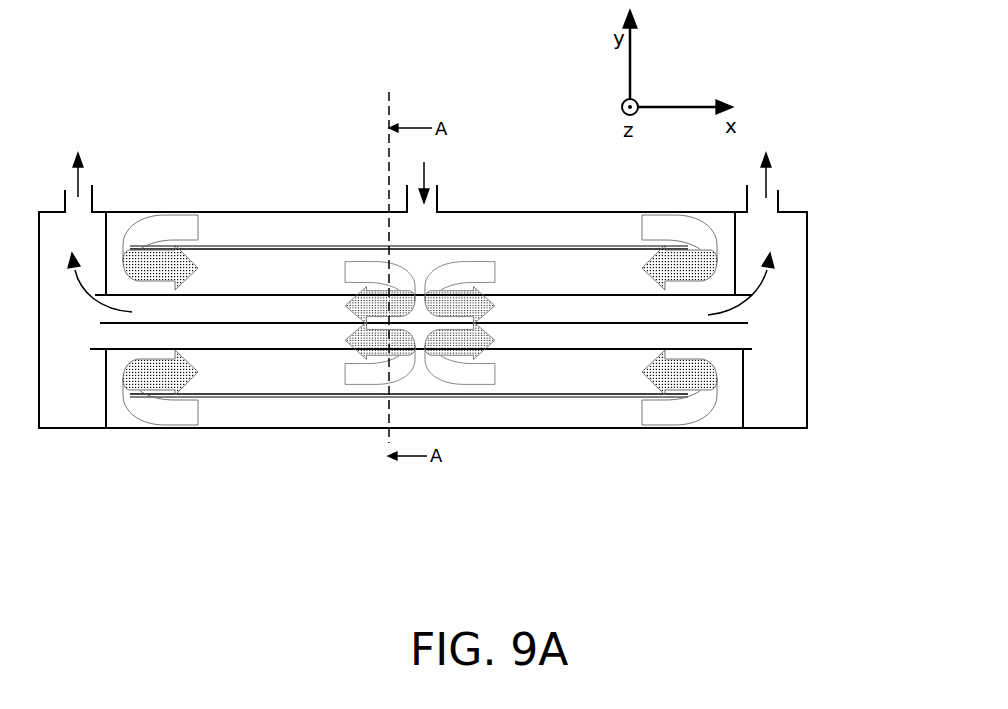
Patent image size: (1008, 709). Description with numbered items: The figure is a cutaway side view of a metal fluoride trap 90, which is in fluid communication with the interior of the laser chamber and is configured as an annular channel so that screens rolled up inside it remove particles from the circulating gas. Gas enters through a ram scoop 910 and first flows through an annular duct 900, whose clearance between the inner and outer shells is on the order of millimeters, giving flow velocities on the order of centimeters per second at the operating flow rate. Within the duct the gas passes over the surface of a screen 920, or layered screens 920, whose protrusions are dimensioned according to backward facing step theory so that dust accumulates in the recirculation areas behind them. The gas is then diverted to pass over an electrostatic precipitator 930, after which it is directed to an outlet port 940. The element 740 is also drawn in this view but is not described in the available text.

The metal fluoride trap 90 is at (807, 323).
The annular duct 900 is at (557, 242).
The ram scoop 910 is at (438, 212).
The screen 920 is at (363, 247).
The electrostatic precipitator 930 is at (292, 295).
The outlet port 940 is at (92, 200).
The second membrane 740 is at (312, 397).